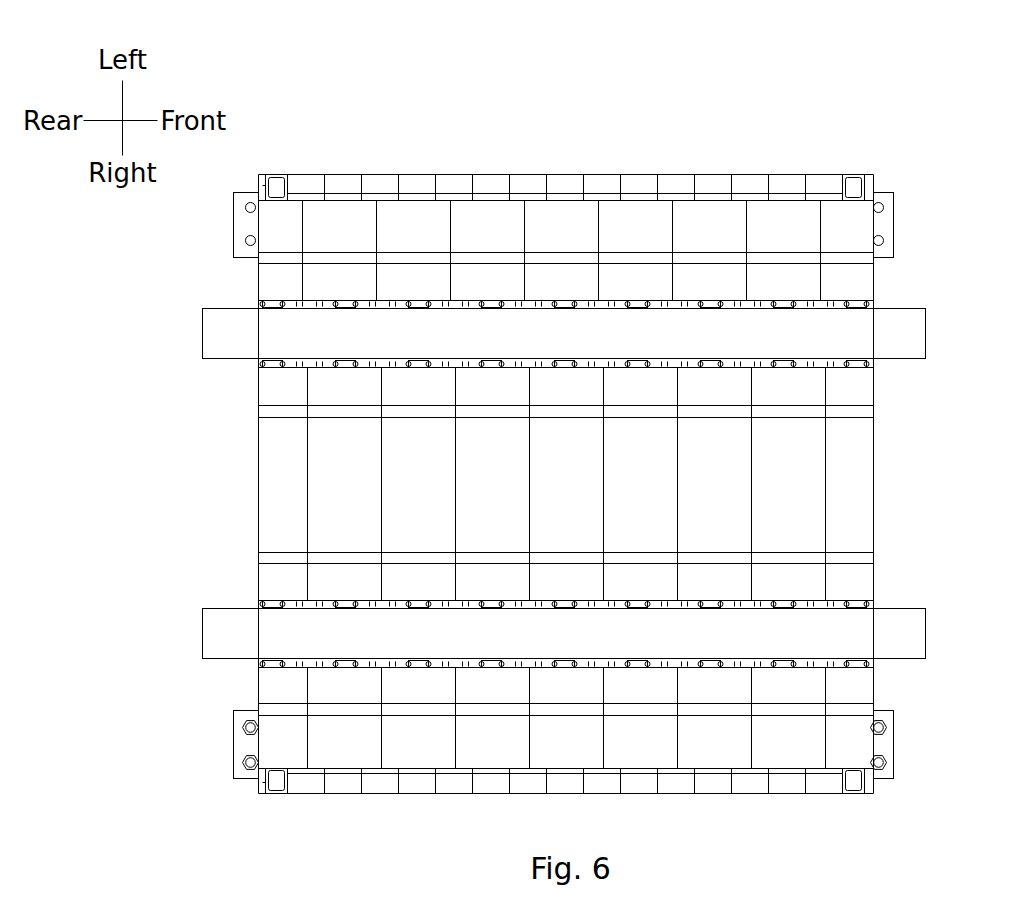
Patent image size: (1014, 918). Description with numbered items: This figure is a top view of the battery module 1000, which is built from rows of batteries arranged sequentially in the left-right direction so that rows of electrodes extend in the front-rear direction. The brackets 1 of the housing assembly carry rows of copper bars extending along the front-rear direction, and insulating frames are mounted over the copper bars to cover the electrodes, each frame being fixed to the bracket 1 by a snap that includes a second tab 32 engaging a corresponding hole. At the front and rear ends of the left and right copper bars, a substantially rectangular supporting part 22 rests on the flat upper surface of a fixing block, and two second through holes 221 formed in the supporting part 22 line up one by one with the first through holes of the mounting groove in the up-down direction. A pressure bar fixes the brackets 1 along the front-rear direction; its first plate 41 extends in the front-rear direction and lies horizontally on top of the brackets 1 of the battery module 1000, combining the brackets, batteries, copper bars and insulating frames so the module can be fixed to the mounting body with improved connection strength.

The battery module 1000 is at (171, 469).
The bracket 1 is at (848, 465).
The supporting part 22 is at (934, 272).
The second through hole 221 is at (880, 244).
The first plate 41 is at (862, 333).
The second tab 32 is at (857, 668).